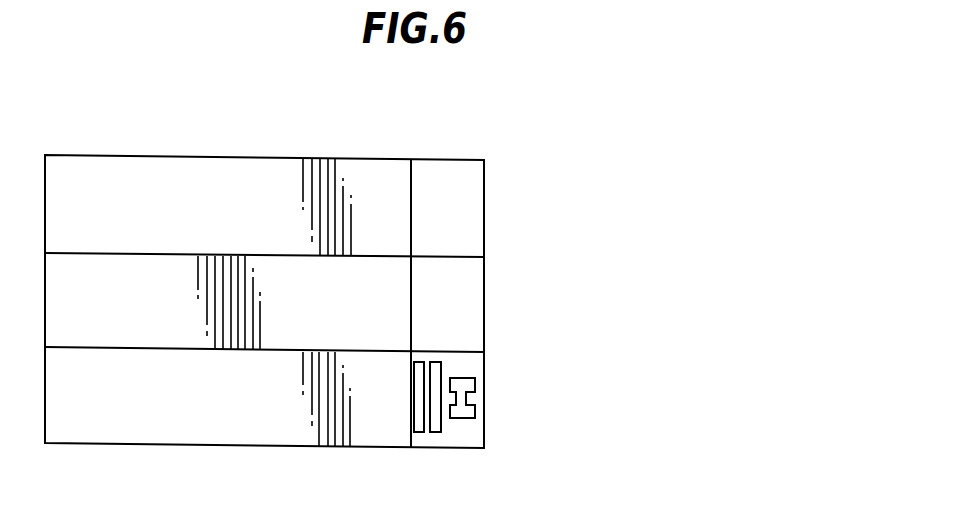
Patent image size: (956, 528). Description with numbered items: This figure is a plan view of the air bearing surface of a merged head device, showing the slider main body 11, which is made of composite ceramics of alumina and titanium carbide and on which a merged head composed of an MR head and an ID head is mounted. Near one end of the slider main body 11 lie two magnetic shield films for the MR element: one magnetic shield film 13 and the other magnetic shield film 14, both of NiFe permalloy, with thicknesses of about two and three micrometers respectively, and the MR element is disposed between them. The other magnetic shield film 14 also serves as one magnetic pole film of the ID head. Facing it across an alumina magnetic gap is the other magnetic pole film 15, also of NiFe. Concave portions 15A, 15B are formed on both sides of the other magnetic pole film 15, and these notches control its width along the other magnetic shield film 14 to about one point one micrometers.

The slider main body 11 is at (92, 173).
The one magnetic shield film 13 is at (417, 430).
The other magnetic shield film 14 is at (435, 430).
The other magnetic pole film 15 is at (461, 397).
The concave portion 15A is at (472, 410).
The concave portion 15B is at (470, 386).